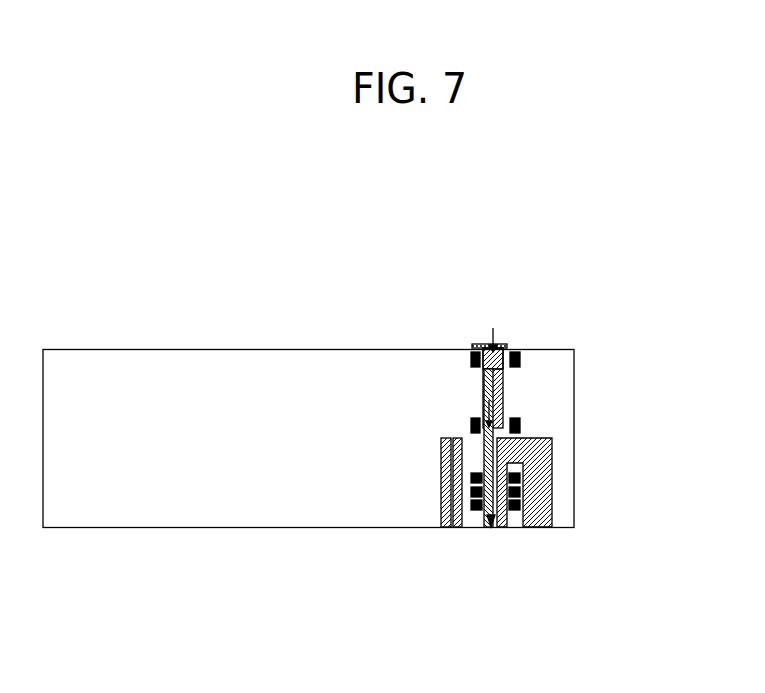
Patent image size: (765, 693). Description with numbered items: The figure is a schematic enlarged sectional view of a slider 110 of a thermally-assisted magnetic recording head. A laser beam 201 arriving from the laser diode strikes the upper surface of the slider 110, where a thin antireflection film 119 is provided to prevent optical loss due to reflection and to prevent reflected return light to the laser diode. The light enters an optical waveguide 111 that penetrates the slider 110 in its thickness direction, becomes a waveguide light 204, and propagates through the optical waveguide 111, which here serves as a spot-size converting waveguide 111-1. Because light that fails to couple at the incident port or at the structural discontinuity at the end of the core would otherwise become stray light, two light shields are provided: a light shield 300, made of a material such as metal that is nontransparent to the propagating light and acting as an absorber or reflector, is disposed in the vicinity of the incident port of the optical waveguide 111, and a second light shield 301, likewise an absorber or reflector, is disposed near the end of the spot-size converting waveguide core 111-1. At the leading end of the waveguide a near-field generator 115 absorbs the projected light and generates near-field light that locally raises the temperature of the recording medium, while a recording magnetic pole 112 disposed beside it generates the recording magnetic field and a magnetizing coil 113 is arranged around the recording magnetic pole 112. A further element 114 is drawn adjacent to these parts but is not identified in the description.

The slider 110 is at (158, 510).
The optical waveguide 111 is at (503, 400).
The spot-size converting waveguide 111-1 is at (503, 371).
The recording magnetic pole 112 is at (537, 456).
The magnetizing coil 113 is at (520, 493).
The side strips 114 is at (440, 527).
The near-field generator 115 is at (490, 527).
The antireflection film 119 is at (505, 343).
The laser beam 201 is at (497, 343).
The waveguide light 204 is at (482, 412).
The light shield 300 is at (520, 358).
The light shield 301 is at (520, 424).